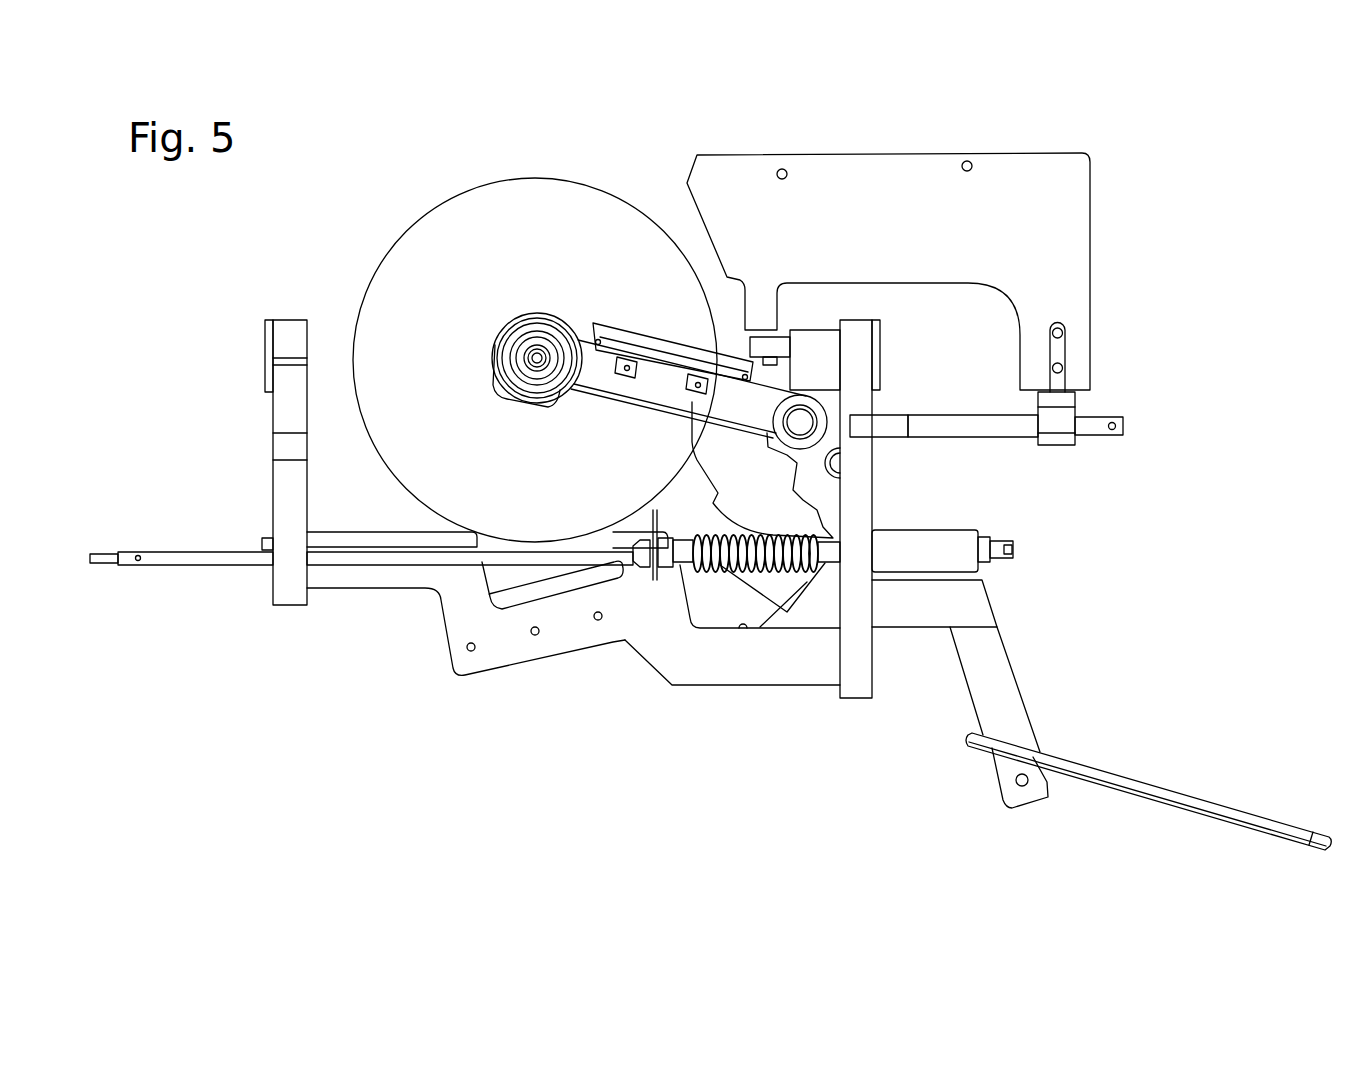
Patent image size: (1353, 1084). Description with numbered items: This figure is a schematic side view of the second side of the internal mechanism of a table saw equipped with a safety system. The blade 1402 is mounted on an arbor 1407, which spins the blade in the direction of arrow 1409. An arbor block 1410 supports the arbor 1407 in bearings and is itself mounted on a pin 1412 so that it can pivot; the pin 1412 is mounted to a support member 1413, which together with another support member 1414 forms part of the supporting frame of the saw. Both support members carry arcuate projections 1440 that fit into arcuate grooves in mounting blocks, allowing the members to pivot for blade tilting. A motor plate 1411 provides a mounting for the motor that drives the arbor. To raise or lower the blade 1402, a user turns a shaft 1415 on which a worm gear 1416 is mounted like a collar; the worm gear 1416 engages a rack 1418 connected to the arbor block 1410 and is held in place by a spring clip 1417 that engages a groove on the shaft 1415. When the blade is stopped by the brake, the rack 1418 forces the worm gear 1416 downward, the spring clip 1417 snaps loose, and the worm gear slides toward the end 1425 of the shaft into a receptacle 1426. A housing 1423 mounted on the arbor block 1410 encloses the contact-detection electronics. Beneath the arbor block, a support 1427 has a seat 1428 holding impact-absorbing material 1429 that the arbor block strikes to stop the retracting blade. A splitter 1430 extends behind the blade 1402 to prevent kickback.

The blade 1402 is at (440, 215).
The arbor 1407 is at (530, 358).
The arrow 1409 is at (483, 238).
The arbor block 1410 is at (590, 372).
The motor plate 1411 is at (1170, 783).
The pin 1412 is at (802, 423).
The support member 1413 is at (855, 702).
The support member 1414 is at (290, 600).
The shaft 1415 is at (192, 558).
The worm gear 1416 is at (820, 562).
The spring clip 1417 is at (655, 568).
The rack 1418 is at (803, 518).
The housing 1423 is at (660, 360).
The end 1425 is at (1008, 556).
The receptacle 1426 is at (950, 540).
The support 1427 is at (345, 582).
The seat 1428 is at (526, 582).
The impact-absorbing material 1429 is at (535, 593).
The splitter 1430 is at (1085, 192).
The arcuate projections 1440 is at (268, 345).